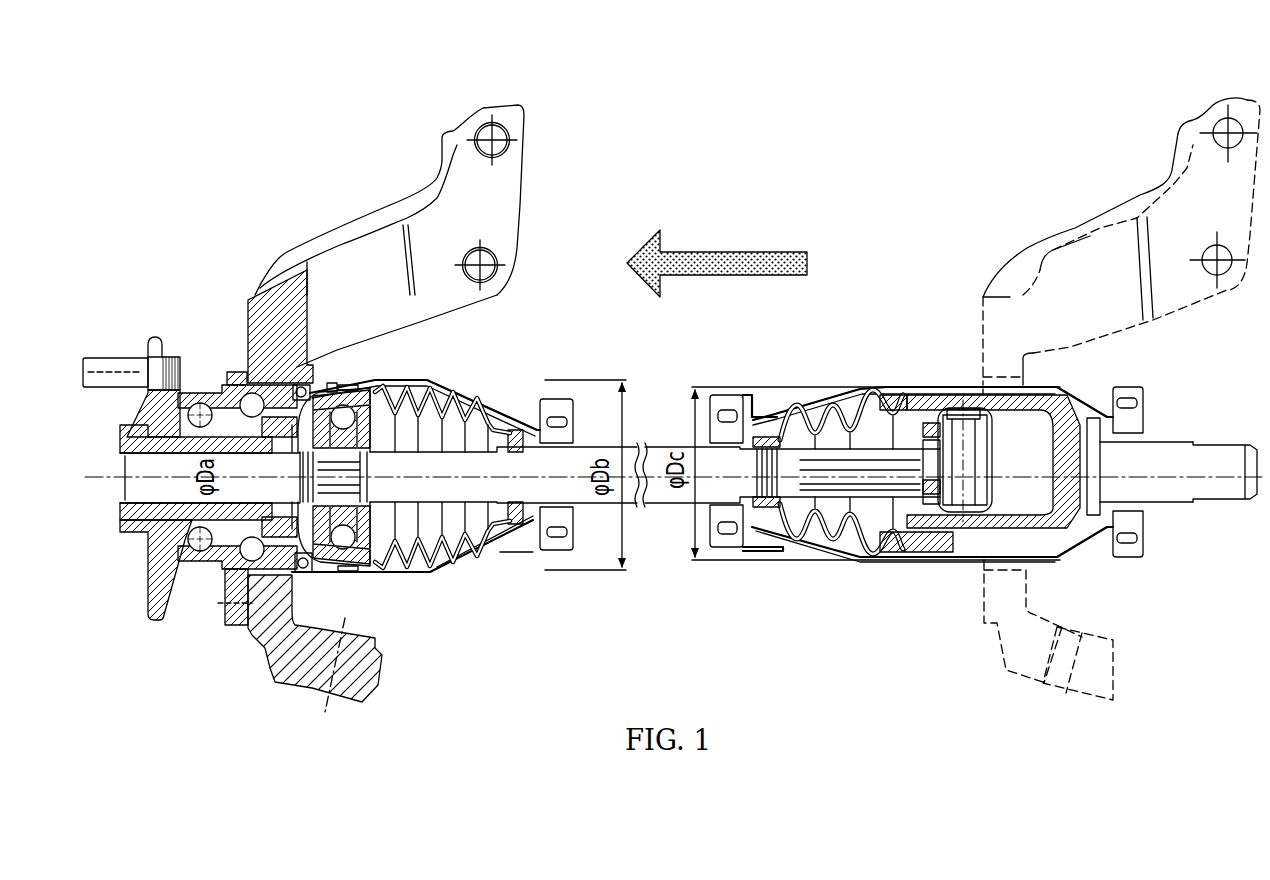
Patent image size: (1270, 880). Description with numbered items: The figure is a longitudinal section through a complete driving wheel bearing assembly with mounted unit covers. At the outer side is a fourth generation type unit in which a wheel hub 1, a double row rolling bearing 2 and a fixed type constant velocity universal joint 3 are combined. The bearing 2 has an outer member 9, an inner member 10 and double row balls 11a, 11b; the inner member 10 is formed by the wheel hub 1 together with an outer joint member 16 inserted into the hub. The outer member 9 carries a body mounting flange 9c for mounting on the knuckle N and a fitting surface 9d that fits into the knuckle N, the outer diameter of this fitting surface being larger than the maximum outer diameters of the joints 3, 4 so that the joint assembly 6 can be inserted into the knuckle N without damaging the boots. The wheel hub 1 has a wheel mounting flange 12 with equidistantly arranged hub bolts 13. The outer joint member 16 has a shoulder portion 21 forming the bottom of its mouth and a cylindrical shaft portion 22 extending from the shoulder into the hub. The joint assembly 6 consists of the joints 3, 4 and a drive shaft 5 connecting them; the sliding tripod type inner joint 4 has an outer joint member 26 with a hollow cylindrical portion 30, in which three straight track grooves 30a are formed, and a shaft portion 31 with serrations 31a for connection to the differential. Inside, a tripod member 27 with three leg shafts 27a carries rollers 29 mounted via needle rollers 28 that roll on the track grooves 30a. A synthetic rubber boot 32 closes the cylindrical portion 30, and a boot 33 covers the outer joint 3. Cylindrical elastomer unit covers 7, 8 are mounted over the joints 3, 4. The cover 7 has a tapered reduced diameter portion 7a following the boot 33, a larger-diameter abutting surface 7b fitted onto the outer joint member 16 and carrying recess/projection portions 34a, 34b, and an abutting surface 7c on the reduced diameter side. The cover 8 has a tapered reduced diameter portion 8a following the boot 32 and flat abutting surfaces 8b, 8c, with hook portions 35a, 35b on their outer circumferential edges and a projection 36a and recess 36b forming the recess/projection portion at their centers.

The wheel hub 1 is at (153, 553).
The double row rolling bearing 2 is at (192, 479).
The constant velocity universal joint 3 is at (395, 453).
The constant velocity universal joint 4 is at (998, 448).
The drive shaft 5 is at (595, 506).
The joint assembly 6 is at (753, 465).
The unit cover 7 is at (416, 451).
The reduced diameter portion 7a is at (470, 382).
The abutting surface 7b is at (312, 385).
The abutting surface 7c is at (510, 430).
The unit cover 8 is at (940, 458).
The reduced diameter portion 8a is at (822, 400).
The abutting surface 8b is at (1100, 388).
The abutting surface 8c is at (771, 415).
The outer member 9 is at (232, 385).
The body mounting flange 9c is at (240, 626).
The fitting surface 9d is at (246, 372).
The inner member 10 is at (136, 462).
The ball 11a is at (199, 553).
The ball 11b is at (265, 557).
The wheel mounting flange 12 is at (152, 337).
The hub bolt 13 is at (110, 358).
The outer joint member 16 is at (333, 384).
The shoulder portion 21 is at (267, 438).
The shaft portion 22 is at (120, 504).
The outer joint member 26 is at (1009, 385).
The tripod member 27 is at (970, 505).
The leg shaft 27a is at (972, 423).
The needle rollers 28 is at (921, 450).
The rollers 29 is at (990, 437).
The cylindrical portion 30 is at (951, 557).
The track grooves 30a is at (905, 390).
The shaft portion 31 is at (1180, 503).
The serrations 31a is at (1225, 445).
The boot 32 is at (857, 392).
The boot 33 is at (463, 565).
The seal 34a is at (302, 385).
The seal 34b is at (308, 572).
The hook portion 35a is at (560, 399).
The hook portion 35b is at (520, 553).
The projection 36a is at (566, 417).
The recess 36b is at (557, 547).
The knuckle N is at (330, 242).